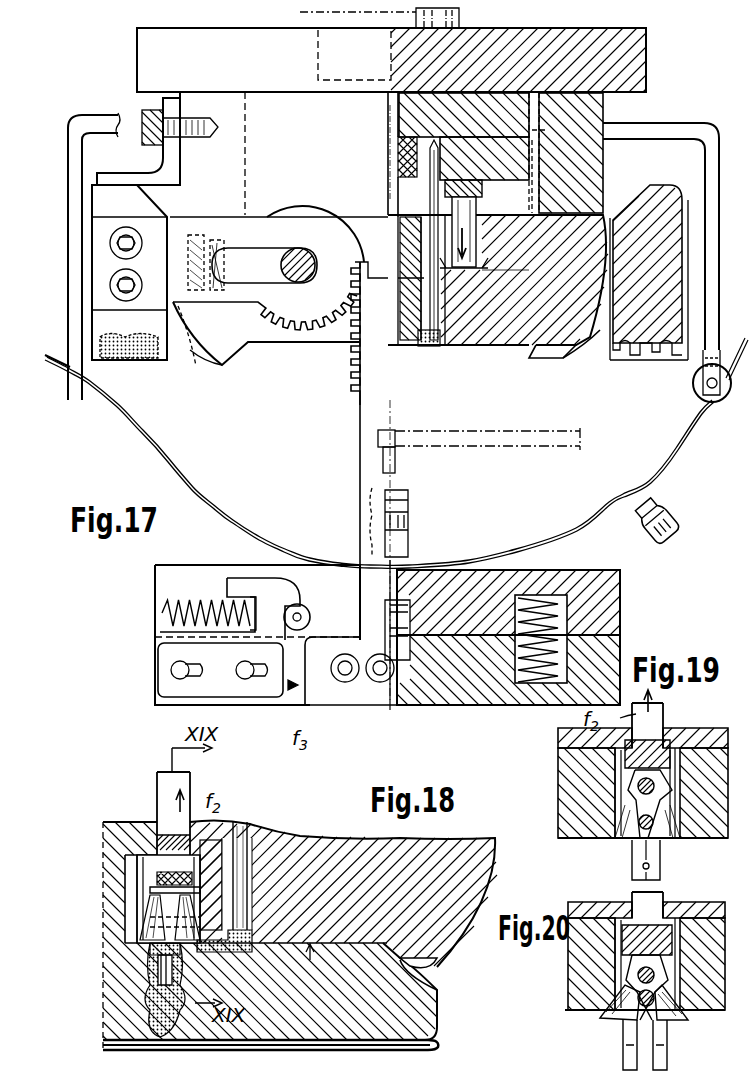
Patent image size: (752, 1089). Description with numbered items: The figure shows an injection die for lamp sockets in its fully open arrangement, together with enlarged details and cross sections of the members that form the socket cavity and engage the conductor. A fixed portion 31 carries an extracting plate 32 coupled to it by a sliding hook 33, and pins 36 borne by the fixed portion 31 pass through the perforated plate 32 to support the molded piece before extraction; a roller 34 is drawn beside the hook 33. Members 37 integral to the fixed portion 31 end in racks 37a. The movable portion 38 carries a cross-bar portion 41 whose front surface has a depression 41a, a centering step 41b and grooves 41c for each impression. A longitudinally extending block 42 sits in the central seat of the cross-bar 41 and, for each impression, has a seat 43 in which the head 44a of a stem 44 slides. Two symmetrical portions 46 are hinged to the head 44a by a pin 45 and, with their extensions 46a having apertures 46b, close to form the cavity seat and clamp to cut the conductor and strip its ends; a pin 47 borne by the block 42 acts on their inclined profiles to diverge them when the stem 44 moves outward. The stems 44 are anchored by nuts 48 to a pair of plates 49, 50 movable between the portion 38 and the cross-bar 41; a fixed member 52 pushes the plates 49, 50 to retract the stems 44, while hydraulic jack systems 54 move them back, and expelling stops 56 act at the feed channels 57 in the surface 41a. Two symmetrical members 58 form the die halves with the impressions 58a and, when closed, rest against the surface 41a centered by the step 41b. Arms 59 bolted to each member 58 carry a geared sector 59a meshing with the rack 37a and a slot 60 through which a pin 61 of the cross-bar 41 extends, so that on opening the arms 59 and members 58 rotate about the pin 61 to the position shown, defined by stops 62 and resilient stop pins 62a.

In FIG. 17, the fixed portion of the die 31 is at (597, 178).
In FIG. 17, the extracting plate 32 is at (605, 572).
In FIG. 17, the hook 33 is at (262, 568).
In FIG. 17, the roller 34 is at (308, 614).
In FIG. 17, the pins 36 is at (410, 561).
In FIG. 17, the member integral to the fixed portion 37 is at (358, 442).
In FIG. 17, the rack 37a is at (352, 374).
In FIG. 17, the movable portion of the die 38 is at (638, 78).
In FIG. 17, the cross-bar portion of the die 41 is at (463, 340).
In FIG. 18, the cross-bar portion of the die 41 is at (318, 840).
In FIG. 19, the cross-bar portion of the die 41 is at (560, 742).
In FIG. 17, the depression 41a is at (507, 345).
In FIG. 18, the depression 41a is at (310, 950).
In FIG. 17, the centering step 41b is at (226, 367).
In FIG. 18, the centering step 41b is at (438, 990).
In FIG. 17, the grooves 41c is at (565, 358).
In FIG. 18, the grooves 41c is at (437, 963).
In FIG. 17, the longitudinally extending block 42 is at (403, 282).
In FIG. 18, the longitudinally extending block 42 is at (130, 850).
In FIG. 19, the longitudinally extending block 42 is at (562, 800).
In FIG. 20, the longitudinally extending block 42 is at (582, 979).
In FIG. 18, the seat 43 is at (200, 913).
In FIG. 17, the stem 44 is at (392, 202).
In FIG. 18, the stem 44 is at (157, 784).
In FIG. 19, the stem 44 is at (660, 726).
In FIG. 18, the head of the stem 44a is at (137, 870).
In FIG. 19, the head of the stem 44a is at (618, 762).
In FIG. 18, the pin 45 is at (150, 892).
In FIG. 19, the pin 45 is at (680, 770).
In FIG. 20, the pin 45 is at (640, 967).
In FIG. 18, the symmetrical portions 46 is at (152, 920).
In FIG. 19, the symmetrical portions 46 is at (612, 842).
In FIG. 20, the symmetrical portions 46 is at (600, 1022).
In FIG. 18, the extensions 46a is at (150, 952).
In FIG. 19, the extensions 46a is at (662, 870).
In FIG. 20, the extensions 46a is at (622, 1057).
In FIG. 19, the apertures 46b is at (636, 870).
In FIG. 20, the apertures 46b is at (668, 1054).
In FIG. 18, the pin 47 is at (152, 906).
In FIG. 19, the pin 47 is at (668, 834).
In FIG. 20, the pin 47 is at (625, 1002).
In FIG. 17, the nuts 48 is at (398, 150).
In FIG. 17, the plate 49 is at (396, 106).
In FIG. 17, the plate 50 is at (513, 172).
In FIG. 17, the fixed member 52 is at (330, 14).
In FIG. 17, the hydraulic jack systems 54 is at (470, 212).
In FIG. 17, the expelling stops 56 is at (430, 180).
In FIG. 18, the expelling stops 56 is at (243, 843).
In FIG. 17, the channels 57 is at (430, 347).
In FIG. 17, the symmetrical members 58 is at (115, 198).
In FIG. 18, the symmetrical members 58 is at (115, 1002).
In FIG. 17, the impressions 58a is at (150, 348).
In FIG. 18, the impressions 58a is at (158, 1002).
In FIG. 17, the arms 59 is at (214, 232).
In FIG. 17, the geared sector 59a is at (260, 334).
In FIG. 17, the slot 60 is at (256, 243).
In FIG. 17, the pin 61 is at (298, 248).
In FIG. 17, the stops 62 is at (128, 145).
In FIG. 17, the resilient stop pins 62a is at (183, 345).